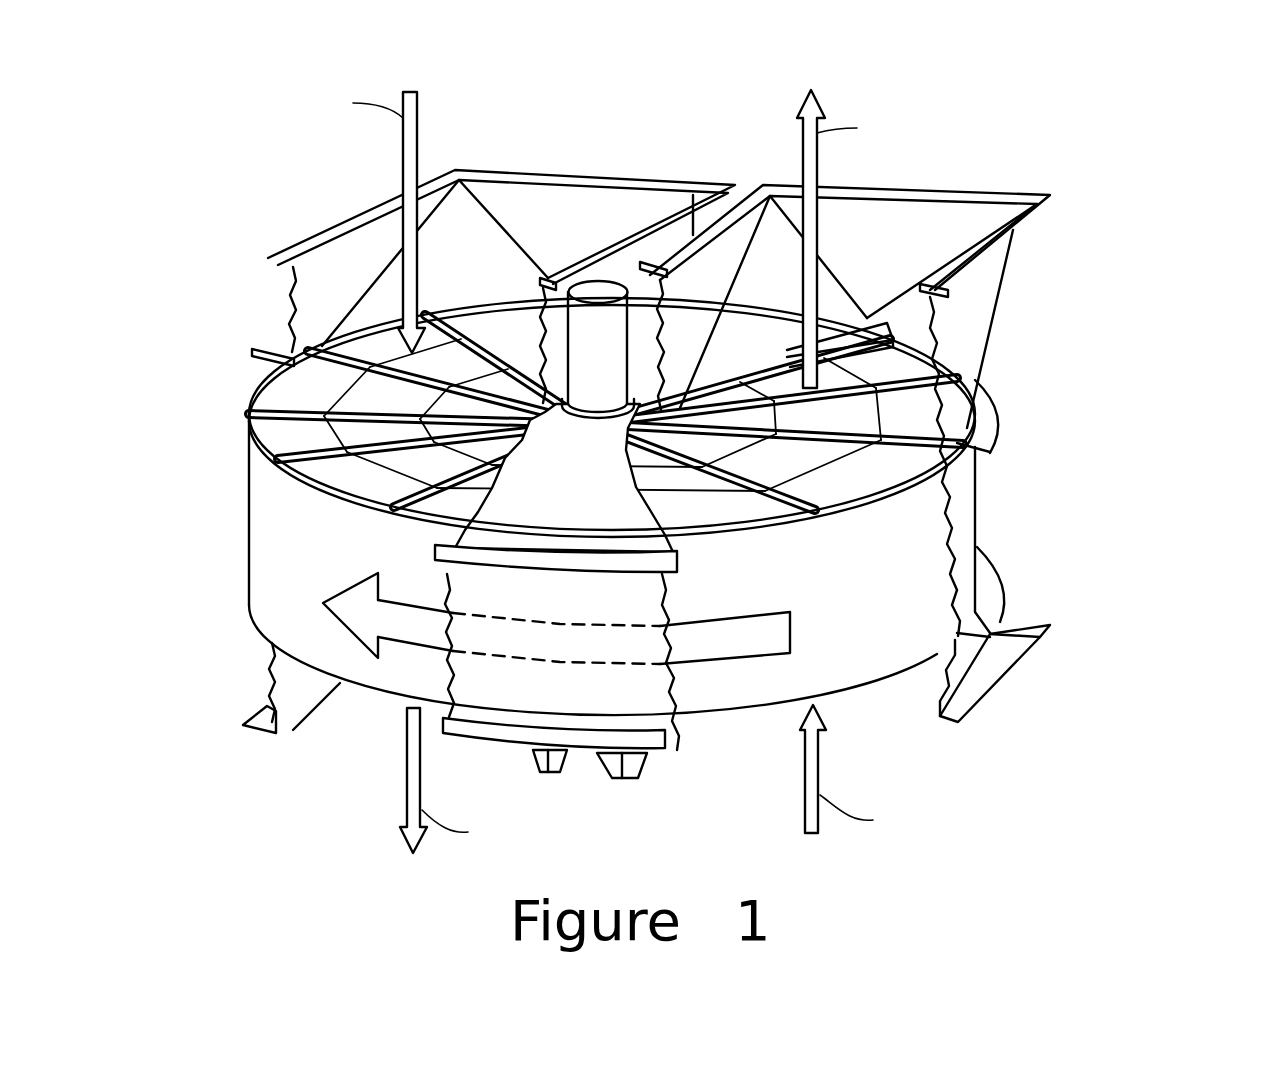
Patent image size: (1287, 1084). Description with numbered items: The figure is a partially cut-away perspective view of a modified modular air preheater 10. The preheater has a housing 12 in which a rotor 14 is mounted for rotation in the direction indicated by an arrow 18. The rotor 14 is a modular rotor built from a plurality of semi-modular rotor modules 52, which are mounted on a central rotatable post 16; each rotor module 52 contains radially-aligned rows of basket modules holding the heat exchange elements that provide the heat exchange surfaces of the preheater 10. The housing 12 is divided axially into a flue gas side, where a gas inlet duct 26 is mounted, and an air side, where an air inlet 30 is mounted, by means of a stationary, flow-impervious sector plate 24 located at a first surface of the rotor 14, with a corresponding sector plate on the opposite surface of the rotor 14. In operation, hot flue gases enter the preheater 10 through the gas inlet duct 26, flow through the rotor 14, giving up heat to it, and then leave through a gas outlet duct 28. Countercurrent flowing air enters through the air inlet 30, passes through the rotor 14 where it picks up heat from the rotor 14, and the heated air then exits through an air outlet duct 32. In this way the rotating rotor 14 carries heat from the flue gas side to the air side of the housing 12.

The modified modular air preheater 10 is at (1160, 182).
The housing 12 is at (996, 484).
The rotor 14 is at (235, 483).
The rotatable post 16 is at (612, 336).
The arrow 18 is at (322, 618).
The sector plate 24 is at (650, 508).
The gas inlet duct 26 is at (538, 205).
The gas outlet duct 28 is at (295, 683).
The air inlet 30 is at (963, 660).
The air outlet duct 32 is at (905, 225).
The semi-modular rotor module 52 is at (292, 386).